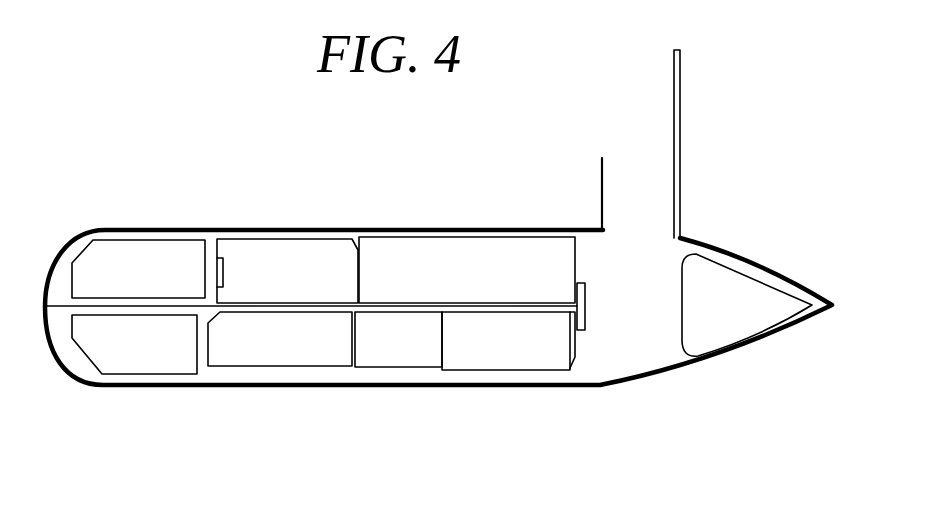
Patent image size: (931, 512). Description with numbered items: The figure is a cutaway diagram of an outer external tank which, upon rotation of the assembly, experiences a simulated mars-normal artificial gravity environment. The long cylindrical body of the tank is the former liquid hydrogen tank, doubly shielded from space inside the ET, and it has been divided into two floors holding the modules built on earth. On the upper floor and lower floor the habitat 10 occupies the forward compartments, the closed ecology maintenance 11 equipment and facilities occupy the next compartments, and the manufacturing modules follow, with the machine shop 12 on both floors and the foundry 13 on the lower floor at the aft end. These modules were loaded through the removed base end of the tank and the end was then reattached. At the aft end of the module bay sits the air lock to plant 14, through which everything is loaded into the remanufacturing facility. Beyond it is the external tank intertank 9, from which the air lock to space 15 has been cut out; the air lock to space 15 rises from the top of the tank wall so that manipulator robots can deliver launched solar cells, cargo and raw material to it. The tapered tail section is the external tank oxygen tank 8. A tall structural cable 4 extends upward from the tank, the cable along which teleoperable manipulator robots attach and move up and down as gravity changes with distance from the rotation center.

The structural cable 4 is at (674, 88).
The external tank oxygen tank 8 is at (723, 293).
The external tank intertank 9 is at (628, 288).
The habitat 10 is at (123, 282).
The closed ecology maintenance 11 is at (268, 282).
The machine shop 12 is at (447, 282).
The foundry 13 is at (487, 350).
The air lock to plant 14 is at (585, 308).
The air lock to space 15 is at (602, 172).